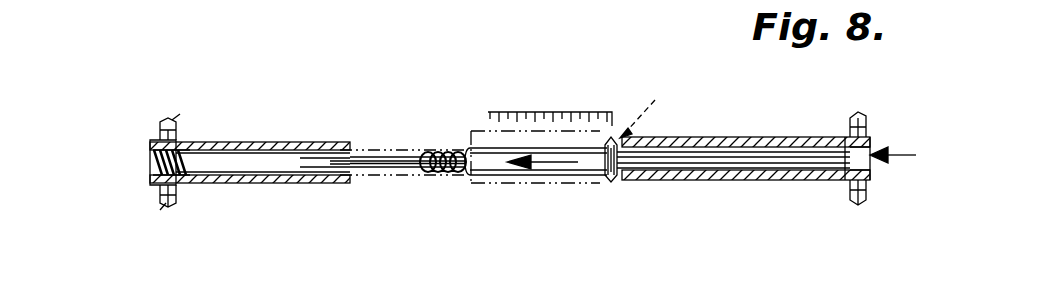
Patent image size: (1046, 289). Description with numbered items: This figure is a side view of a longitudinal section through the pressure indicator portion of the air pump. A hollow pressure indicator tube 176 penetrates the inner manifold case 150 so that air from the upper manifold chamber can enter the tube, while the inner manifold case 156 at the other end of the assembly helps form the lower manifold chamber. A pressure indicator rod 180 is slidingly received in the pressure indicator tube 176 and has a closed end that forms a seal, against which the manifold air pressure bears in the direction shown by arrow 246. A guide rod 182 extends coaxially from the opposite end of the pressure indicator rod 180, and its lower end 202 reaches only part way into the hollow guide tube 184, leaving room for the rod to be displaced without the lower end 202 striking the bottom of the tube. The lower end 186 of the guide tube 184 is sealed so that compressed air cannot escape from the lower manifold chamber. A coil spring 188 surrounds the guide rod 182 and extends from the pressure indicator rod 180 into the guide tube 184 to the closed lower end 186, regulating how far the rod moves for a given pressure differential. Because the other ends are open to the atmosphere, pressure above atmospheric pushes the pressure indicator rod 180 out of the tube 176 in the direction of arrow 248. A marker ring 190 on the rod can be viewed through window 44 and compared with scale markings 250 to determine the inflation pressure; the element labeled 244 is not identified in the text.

The window 44 is at (645, 107).
The inner manifold case 150 is at (846, 112).
The inner manifold case 156 is at (158, 192).
The pressure indicator tube 176 is at (733, 137).
The pressure indicator rod 180 is at (480, 180).
The guide rod 182 is at (385, 150).
The guide tube 184 is at (275, 141).
The lower end of guide tube 186 is at (152, 158).
The coil spring 188 is at (446, 140).
The marker ring 190 is at (618, 182).
The lower end of guide pin 202 is at (315, 184).
The flange 244 is at (852, 182).
The arrow 246 is at (893, 104).
The arrow 248 is at (562, 182).
The scale markings 250 is at (584, 112).